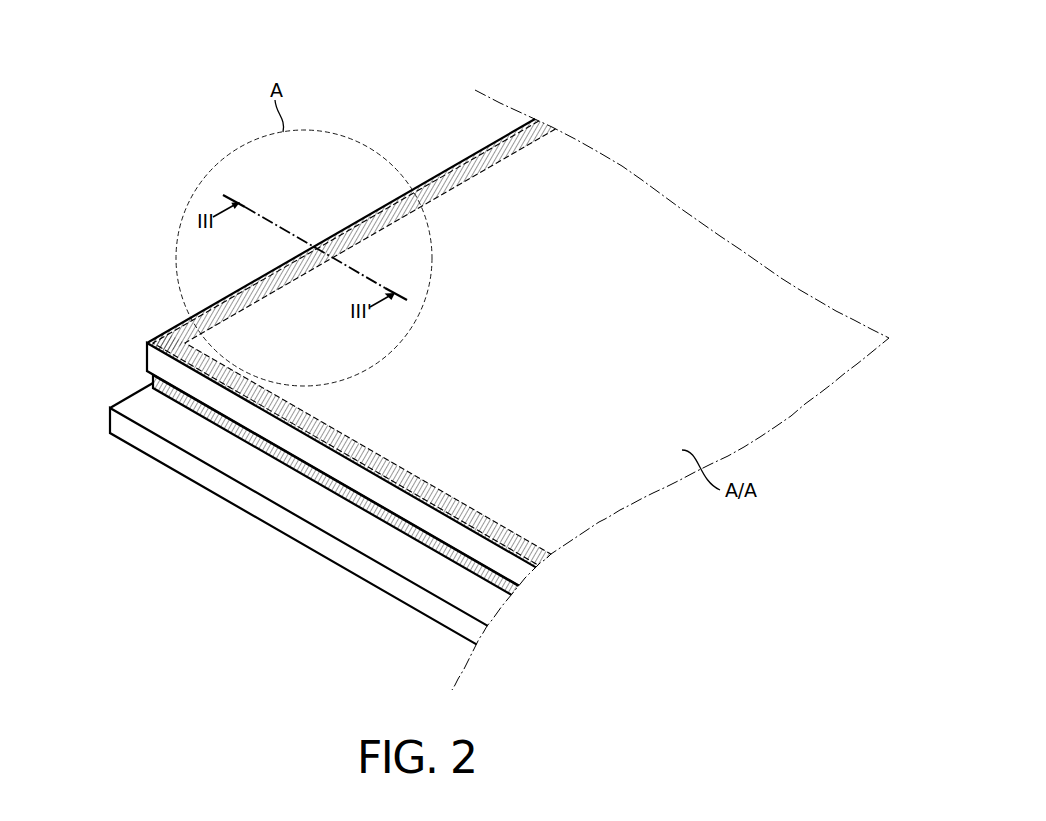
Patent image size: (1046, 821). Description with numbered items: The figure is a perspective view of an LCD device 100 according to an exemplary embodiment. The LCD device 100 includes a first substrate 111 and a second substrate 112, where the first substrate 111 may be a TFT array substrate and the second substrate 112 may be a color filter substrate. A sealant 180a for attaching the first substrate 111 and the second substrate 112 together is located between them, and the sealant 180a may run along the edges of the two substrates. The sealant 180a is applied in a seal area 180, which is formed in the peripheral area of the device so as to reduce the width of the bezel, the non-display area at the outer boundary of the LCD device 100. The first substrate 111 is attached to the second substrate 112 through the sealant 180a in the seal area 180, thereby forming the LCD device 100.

The LCD device 100 is at (733, 38).
The first substrate 111 is at (118, 425).
The second substrate 112 is at (157, 357).
The seal area 180 is at (482, 160).
The sealant 180a is at (153, 381).